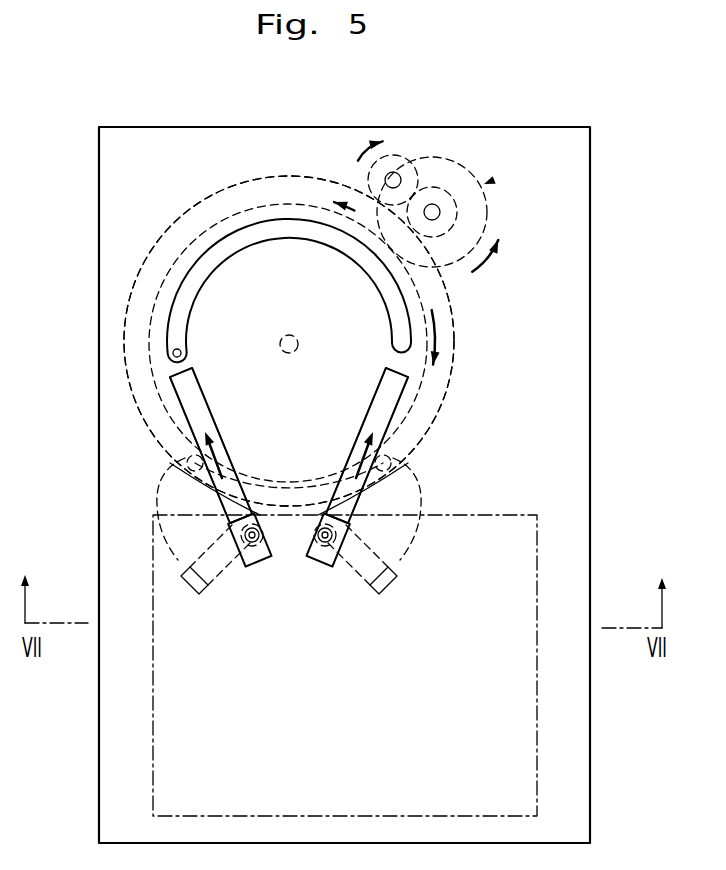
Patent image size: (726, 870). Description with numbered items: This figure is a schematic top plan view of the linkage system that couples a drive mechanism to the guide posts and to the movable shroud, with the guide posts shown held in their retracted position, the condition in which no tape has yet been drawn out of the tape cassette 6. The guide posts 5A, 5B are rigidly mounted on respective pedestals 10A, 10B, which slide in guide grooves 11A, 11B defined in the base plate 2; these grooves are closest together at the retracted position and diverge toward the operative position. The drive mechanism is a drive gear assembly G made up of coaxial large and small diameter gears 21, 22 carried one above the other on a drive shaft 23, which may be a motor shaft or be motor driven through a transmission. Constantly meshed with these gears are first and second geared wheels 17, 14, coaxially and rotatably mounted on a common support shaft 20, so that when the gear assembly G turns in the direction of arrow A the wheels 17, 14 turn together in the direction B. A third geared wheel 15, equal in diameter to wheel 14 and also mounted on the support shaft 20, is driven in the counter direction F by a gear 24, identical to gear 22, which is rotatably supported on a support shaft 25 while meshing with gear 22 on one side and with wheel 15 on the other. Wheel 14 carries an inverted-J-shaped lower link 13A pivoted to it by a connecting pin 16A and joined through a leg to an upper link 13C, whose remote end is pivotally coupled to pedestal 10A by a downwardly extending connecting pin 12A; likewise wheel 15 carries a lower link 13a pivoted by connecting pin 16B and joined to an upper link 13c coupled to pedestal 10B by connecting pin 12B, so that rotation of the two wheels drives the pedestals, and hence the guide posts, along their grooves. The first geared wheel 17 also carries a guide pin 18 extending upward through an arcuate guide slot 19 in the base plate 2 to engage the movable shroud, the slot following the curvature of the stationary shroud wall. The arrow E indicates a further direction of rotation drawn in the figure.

The base plate 2 is at (590, 768).
The guide post 5A is at (250, 534).
The guide post 5B is at (325, 535).
The tape cassette 6 is at (537, 697).
The pedestal 10A is at (252, 545).
The pedestal 10B is at (326, 545).
The guide groove 11A is at (200, 400).
The guide groove 11B is at (396, 401).
The connecting pin 12A is at (259, 568).
The connecting pin 12B is at (315, 566).
The lower link 13A is at (160, 493).
The lower link 13a is at (420, 495).
The upper link 13C is at (227, 573).
The upper link 13c is at (350, 583).
The second geared wheel 14 is at (185, 214).
The third geared wheel 15 is at (289, 341).
The connecting pin 16A is at (187, 463).
The connecting pin 16B is at (391, 461).
The first geared wheel 17 is at (230, 213).
The guide pin 18 is at (170, 351).
The guide slot 19 is at (275, 228).
The support shaft 20 is at (290, 334).
The large diameter gear 21 is at (450, 158).
The small diameter gear 22 is at (458, 214).
The drive shaft 23 is at (438, 205).
The gear 24 is at (407, 156).
The support shaft 25 is at (385, 179).
The direction of rotation of the gear assembly A is at (486, 262).
The direction of rotation of the geared wheels B is at (437, 338).
The rotation direction E is at (371, 142).
The direction of rotation of the third geared wheel F is at (350, 217).
The drive gear assembly G is at (488, 182).